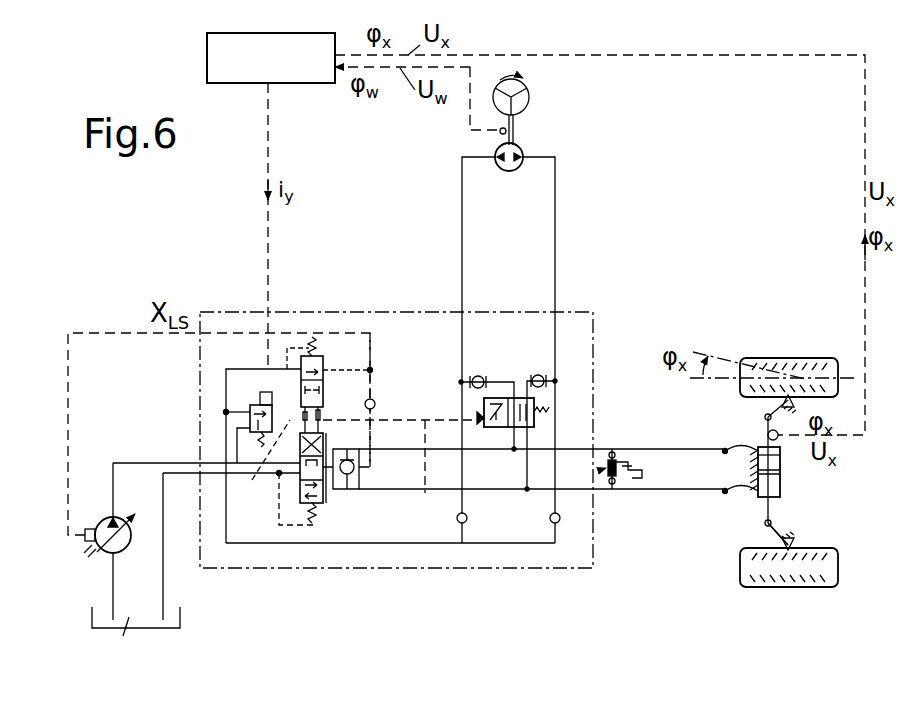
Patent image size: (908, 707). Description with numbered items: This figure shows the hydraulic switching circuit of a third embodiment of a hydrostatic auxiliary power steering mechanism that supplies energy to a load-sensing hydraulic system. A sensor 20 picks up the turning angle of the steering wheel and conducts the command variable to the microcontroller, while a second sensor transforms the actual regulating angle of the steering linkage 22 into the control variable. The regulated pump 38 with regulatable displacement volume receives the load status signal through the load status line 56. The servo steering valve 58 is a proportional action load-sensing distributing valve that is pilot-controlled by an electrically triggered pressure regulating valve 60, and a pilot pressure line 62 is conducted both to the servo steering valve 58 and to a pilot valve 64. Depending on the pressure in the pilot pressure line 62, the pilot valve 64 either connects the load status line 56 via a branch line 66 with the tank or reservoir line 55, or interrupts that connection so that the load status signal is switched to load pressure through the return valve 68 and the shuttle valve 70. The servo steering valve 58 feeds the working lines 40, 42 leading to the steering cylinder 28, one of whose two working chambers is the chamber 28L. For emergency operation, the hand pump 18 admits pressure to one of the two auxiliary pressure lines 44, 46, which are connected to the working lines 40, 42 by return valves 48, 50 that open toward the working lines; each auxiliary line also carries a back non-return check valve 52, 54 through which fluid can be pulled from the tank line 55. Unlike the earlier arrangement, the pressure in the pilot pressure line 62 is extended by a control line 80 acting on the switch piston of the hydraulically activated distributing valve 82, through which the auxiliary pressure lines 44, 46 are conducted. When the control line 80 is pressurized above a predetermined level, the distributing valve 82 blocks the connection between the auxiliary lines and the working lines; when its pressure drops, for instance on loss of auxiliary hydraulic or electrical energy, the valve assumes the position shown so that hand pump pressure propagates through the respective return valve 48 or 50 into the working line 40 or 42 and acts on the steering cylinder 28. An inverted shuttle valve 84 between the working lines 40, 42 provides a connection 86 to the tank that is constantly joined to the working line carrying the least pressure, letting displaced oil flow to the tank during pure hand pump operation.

The hand pump 18 is at (518, 150).
The sensor 20 is at (500, 133).
The steering linkage 22 is at (780, 522).
The steering cylinder 28 is at (785, 482).
The working chamber 28L is at (758, 455).
The pump 38 is at (86, 541).
The working line 40 is at (672, 490).
The working line 42 is at (672, 449).
The auxiliary pressure line 44 is at (556, 247).
The auxiliary pressure line 46 is at (463, 247).
The return valve 48 is at (535, 375).
The return valve 50 is at (472, 385).
The non-return check valve 52 is at (559, 523).
The non-return check valve 54 is at (466, 523).
The tank or reservoir line 55 is at (165, 575).
The load status line 56 is at (106, 330).
The servo steering valve 58 is at (328, 508).
The pressure regulating valve 60 is at (246, 405).
The pilot pressure line 62 is at (260, 467).
The pilot valve 64 is at (297, 388).
The branch line 66 is at (347, 370).
The return valve 68 is at (374, 398).
The shuttle valve 70 is at (355, 475).
The control line 80 is at (400, 474).
The 4/2 distributing valve 82 is at (505, 430).
The inverted shuttle valve 84 is at (600, 478).
The connection 86 is at (620, 458).